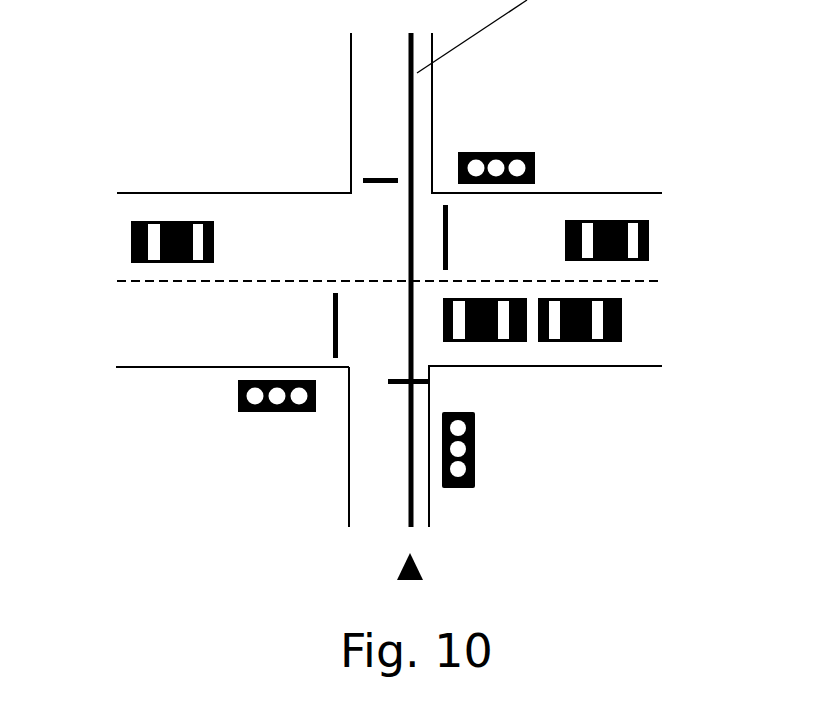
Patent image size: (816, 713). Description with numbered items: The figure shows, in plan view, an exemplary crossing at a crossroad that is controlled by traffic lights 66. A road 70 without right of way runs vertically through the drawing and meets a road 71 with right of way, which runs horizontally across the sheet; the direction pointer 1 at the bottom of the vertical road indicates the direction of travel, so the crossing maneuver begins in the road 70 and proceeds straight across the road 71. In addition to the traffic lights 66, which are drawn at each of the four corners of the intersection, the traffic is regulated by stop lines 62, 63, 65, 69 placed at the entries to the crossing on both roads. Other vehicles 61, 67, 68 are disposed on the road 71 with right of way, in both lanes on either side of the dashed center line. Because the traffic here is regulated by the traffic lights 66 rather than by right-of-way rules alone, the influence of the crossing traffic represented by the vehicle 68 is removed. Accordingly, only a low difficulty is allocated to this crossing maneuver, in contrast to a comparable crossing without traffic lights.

The direction pointer 1 is at (428, 567).
The other vehicle 61 is at (162, 221).
The stop line 62 is at (332, 308).
The stop line 63 is at (364, 180).
The stop line 65 is at (448, 228).
The traffic lights 66 is at (539, 152).
The other vehicle 67 is at (630, 220).
The other vehicle 68 is at (600, 340).
The stop line 69 is at (428, 380).
The road without right of way 70 is at (375, 459).
The road with right of way 71 is at (143, 343).